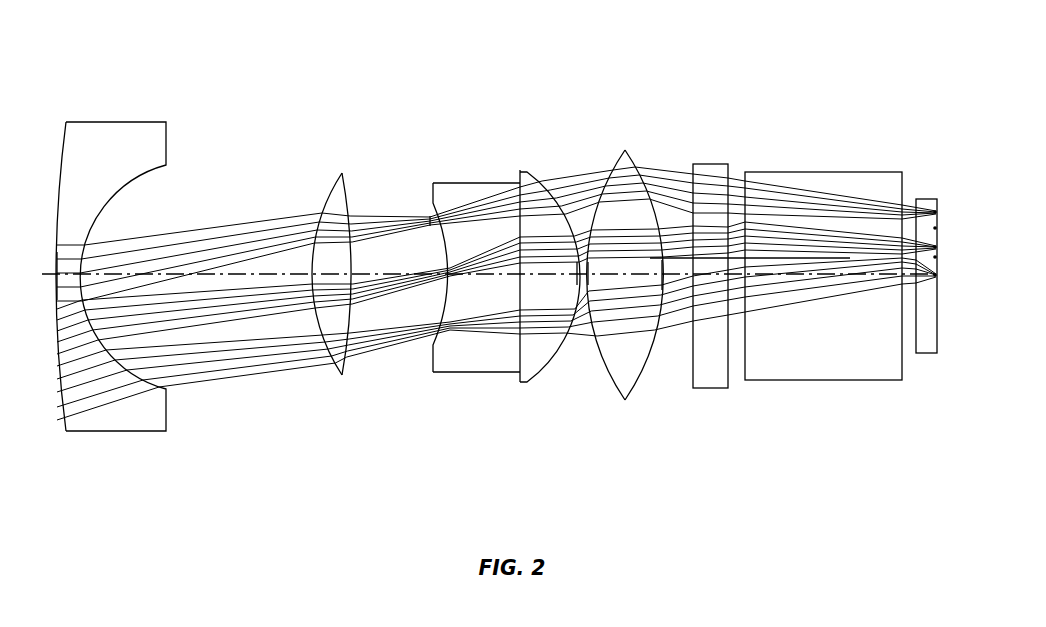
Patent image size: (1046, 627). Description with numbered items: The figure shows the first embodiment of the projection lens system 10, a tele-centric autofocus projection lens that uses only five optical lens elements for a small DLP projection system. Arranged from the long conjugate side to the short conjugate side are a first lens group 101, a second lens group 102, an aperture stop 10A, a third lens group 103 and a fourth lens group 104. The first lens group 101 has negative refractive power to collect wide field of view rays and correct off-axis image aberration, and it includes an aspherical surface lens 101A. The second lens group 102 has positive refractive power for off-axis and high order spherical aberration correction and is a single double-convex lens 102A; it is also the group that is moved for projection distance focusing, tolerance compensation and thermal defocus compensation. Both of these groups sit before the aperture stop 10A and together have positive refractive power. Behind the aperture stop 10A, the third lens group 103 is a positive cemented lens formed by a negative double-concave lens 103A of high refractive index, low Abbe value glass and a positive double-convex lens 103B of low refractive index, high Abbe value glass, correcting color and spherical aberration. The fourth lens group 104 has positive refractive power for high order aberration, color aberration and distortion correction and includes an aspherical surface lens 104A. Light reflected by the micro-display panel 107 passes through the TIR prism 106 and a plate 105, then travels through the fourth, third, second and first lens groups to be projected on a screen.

The projection lens system 10 is at (842, 100).
The aperture stop 10A is at (421, 202).
The first lens group 101 is at (154, 132).
The aspherical surface lens 101A is at (118, 446).
The second lens group 102 is at (340, 149).
The double-convex lens 102A is at (345, 392).
The third lens group 103 is at (526, 160).
The negative double-concave lens 103A is at (478, 384).
The positive double-convex lens 103B is at (530, 394).
The fourth lens group 104 is at (661, 154).
The aspherical surface lens 104A is at (625, 414).
The plate 105 is at (712, 404).
The TIR prism 106 is at (823, 394).
The micro-display panel 107 is at (940, 354).